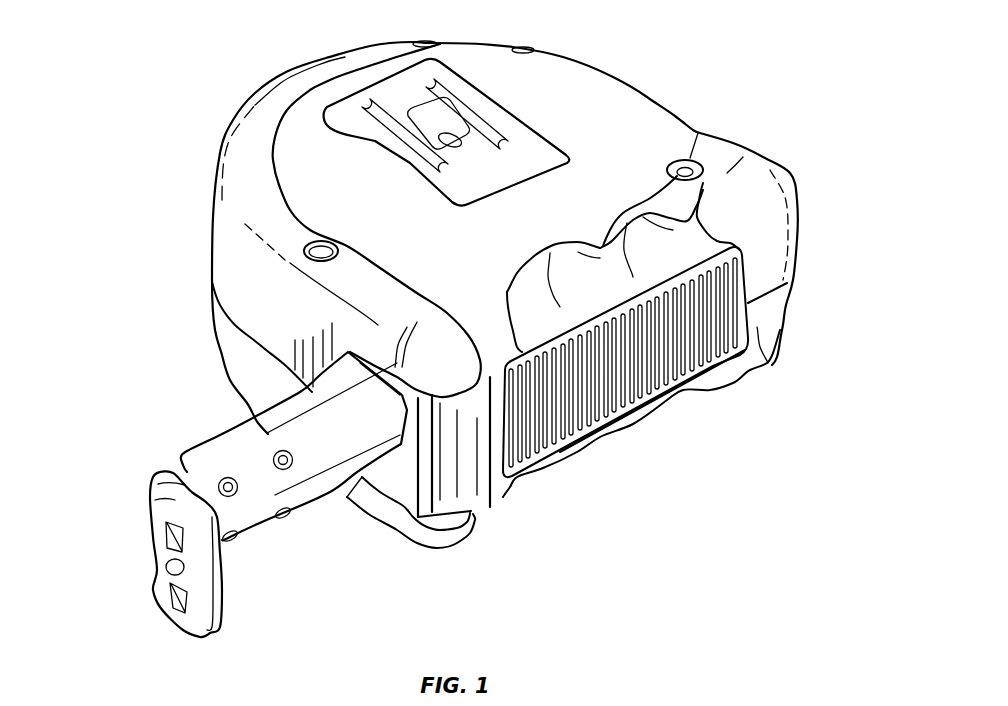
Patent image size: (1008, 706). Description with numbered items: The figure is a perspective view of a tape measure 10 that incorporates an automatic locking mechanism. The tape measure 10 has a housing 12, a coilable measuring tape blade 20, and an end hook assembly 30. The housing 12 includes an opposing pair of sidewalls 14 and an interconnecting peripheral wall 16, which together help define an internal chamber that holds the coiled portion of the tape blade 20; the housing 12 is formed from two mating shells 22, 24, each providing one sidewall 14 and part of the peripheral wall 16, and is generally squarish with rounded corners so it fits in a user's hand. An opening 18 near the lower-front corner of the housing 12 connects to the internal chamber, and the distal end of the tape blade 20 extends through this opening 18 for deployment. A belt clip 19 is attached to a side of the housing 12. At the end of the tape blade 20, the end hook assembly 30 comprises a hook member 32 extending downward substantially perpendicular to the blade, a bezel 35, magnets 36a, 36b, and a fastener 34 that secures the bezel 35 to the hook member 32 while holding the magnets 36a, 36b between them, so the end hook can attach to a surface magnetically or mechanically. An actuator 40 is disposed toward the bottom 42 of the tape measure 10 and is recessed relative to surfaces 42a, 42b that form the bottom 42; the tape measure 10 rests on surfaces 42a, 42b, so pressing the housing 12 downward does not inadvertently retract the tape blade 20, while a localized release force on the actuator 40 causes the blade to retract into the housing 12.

The tape measure 10 is at (680, 66).
The housing 12 is at (487, 70).
The sidewall 14 is at (300, 127).
The interconnecting peripheral wall 16 is at (230, 242).
The belt clip 19 is at (390, 87).
The tape blade 20 is at (240, 442).
The opening 18 is at (336, 507).
The mating shell 22 is at (786, 328).
The mating shell 24 is at (797, 220).
The end hook assembly 30 is at (219, 637).
The hook member 32 is at (163, 470).
The fastener 34 is at (168, 567).
The bezel 35 is at (160, 497).
The magnet 36a is at (163, 537).
The magnet 36b is at (172, 598).
The actuator 40 is at (667, 368).
The bottom 42 is at (631, 446).
The surface 42a is at (495, 442).
The surface 42b is at (768, 364).